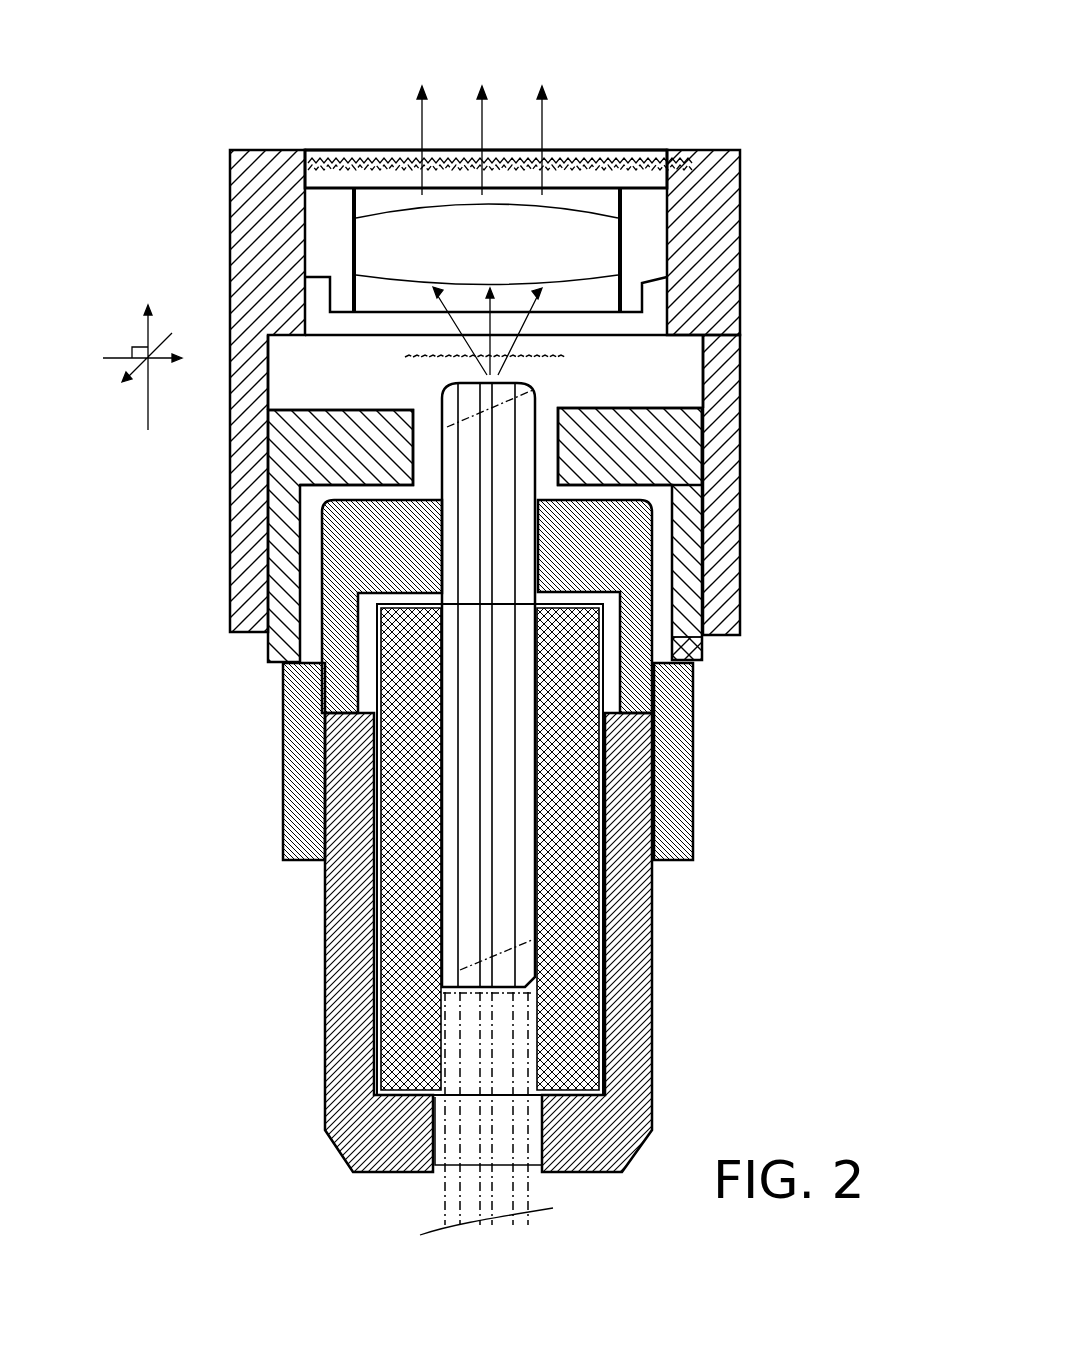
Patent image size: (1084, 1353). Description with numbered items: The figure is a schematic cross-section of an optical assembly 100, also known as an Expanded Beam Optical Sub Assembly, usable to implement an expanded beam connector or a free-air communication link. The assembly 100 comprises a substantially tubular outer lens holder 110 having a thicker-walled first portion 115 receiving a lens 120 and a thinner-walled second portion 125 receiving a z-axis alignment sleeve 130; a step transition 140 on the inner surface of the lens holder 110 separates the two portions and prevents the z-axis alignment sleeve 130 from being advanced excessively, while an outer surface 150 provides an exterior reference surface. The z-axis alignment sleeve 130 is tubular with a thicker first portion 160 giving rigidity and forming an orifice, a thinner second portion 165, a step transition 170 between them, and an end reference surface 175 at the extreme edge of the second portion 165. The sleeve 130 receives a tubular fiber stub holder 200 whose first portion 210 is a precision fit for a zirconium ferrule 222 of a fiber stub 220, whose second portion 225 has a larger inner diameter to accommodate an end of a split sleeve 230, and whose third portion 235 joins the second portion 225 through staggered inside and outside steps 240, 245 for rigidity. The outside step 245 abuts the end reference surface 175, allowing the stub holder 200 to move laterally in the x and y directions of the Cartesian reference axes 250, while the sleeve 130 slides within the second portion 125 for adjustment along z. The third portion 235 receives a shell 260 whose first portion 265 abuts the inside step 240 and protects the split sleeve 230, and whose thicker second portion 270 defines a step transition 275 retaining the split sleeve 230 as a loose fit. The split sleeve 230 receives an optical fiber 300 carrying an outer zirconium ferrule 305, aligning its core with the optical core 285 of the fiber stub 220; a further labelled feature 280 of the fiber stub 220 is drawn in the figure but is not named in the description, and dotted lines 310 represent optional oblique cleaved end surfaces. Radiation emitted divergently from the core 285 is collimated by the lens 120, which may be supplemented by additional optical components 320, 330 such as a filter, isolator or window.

The optical assembly 100 is at (684, 92).
The outer lens holder 110 is at (515, 392).
The first portion of lens holder 115 is at (700, 192).
The lens 120 is at (511, 256).
The second portion of lens holder 125 is at (742, 487).
The z-axis alignment sleeve 130 is at (300, 455).
The step transition 140 is at (660, 352).
The outer surface of lens holder 150 is at (230, 250).
The first portion of z-axis alignment sleeve 160 is at (742, 437).
The second portion of z-axis alignment sleeve 165 is at (742, 526).
The step transition 170 is at (323, 488).
The end reference surface 175 is at (265, 668).
The fiber stub holder 200 is at (282, 824).
The first portion of fiber stub holder 210 is at (335, 628).
The fiber stub 220 is at (560, 925).
The zirconium ferrule 222 is at (504, 893).
The second portion of fiber stub holder 225 is at (342, 780).
The split sleeve 230 is at (397, 983).
The third portion of fiber stub holder 235 is at (300, 773).
The inside step 240 is at (693, 725).
The outside step 245 is at (703, 647).
The Cartesian set of reference axes 250 is at (127, 405).
The shell 260 is at (655, 1090).
The first portion of shell 265 is at (617, 806).
The second portion of shell 270 is at (380, 1130).
The step transition 275 is at (377, 1058).
The tube wall 280 is at (540, 907).
The optical core 285 is at (483, 925).
The optical fiber 300 is at (465, 1205).
The outer zirconium ferrule 305 is at (525, 1188).
The dotted lines 310 is at (456, 420).
The additional optical component 320 is at (340, 160).
The additional optical component 330 is at (530, 356).